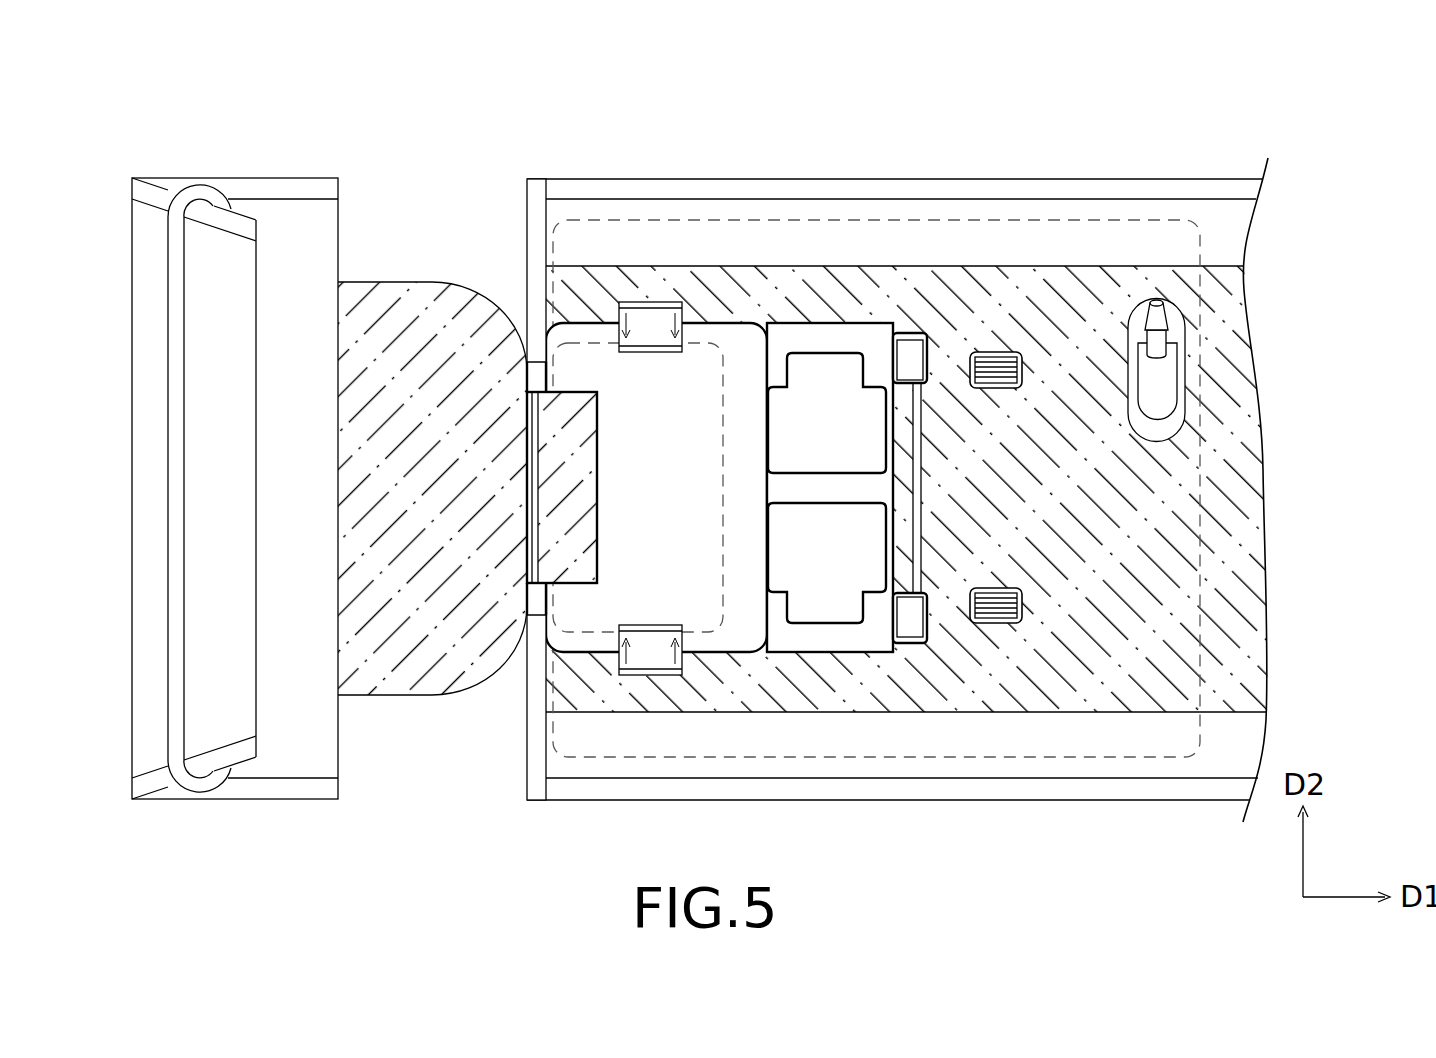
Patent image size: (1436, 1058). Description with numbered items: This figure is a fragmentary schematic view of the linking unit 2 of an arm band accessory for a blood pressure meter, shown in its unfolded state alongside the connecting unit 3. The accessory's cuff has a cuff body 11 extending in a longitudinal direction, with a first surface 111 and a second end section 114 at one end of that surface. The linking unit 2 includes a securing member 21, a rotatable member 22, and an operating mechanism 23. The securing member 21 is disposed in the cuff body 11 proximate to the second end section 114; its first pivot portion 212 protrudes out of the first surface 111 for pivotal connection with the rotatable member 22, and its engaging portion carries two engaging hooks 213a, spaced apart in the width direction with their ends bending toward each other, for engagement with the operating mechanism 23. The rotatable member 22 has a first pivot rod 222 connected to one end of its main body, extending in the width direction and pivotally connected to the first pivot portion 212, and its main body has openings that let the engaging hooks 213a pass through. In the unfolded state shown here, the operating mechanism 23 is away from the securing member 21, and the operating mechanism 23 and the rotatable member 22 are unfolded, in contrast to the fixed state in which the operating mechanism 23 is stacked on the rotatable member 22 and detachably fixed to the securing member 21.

The connecting unit 3 is at (159, 160).
The cuff body 11 is at (1127, 178).
The first surface 111 is at (1218, 223).
The second end section 114 is at (527, 206).
The linking unit 2 is at (746, 473).
The securing member 21 is at (1167, 735).
The rotatable member 22 is at (825, 340).
The operating mechanism 23 is at (707, 337).
The first pivot portion 212 is at (908, 363).
The first pivot rod 222 is at (920, 567).
The engaging hooks 213a is at (996, 352).